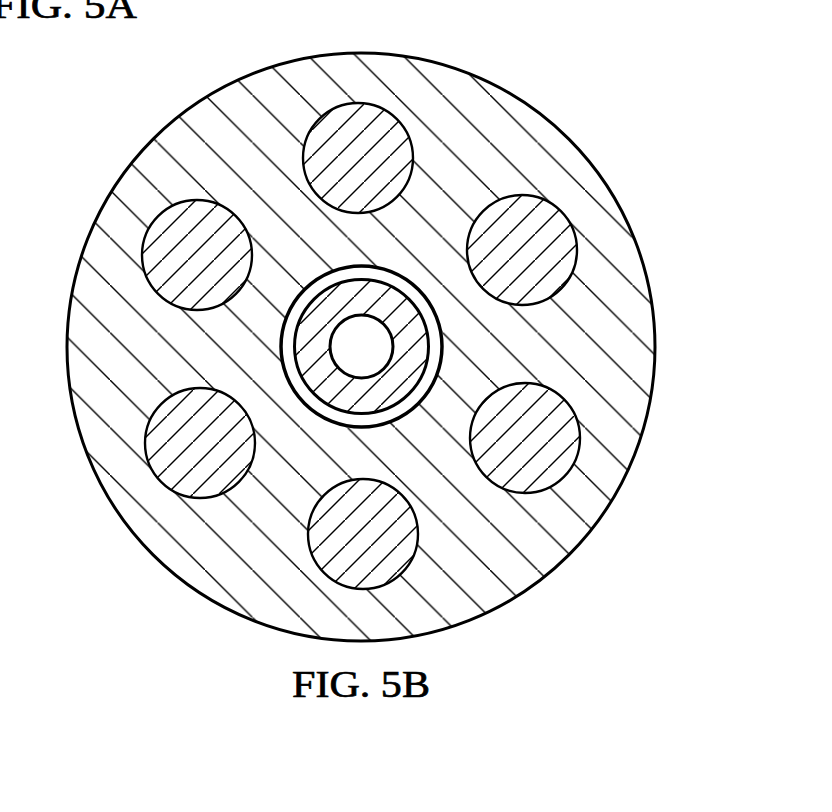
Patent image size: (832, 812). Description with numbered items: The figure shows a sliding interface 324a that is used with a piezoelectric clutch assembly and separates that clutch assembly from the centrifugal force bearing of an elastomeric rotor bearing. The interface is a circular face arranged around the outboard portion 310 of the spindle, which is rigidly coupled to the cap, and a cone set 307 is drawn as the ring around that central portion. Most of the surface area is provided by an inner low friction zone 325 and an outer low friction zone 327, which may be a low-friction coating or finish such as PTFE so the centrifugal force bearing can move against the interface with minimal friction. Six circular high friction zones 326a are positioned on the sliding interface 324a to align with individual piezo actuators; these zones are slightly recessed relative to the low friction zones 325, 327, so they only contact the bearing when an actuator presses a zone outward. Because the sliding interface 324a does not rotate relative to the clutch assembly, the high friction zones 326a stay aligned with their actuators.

The sliding interface 324a is at (536, 54).
The inner low friction zone 325 is at (235, 334).
The outer low friction zone 327 is at (443, 72).
The high friction zones 326a is at (175, 232).
The cone set 307 is at (315, 398).
The outboard portion 310 is at (393, 302).